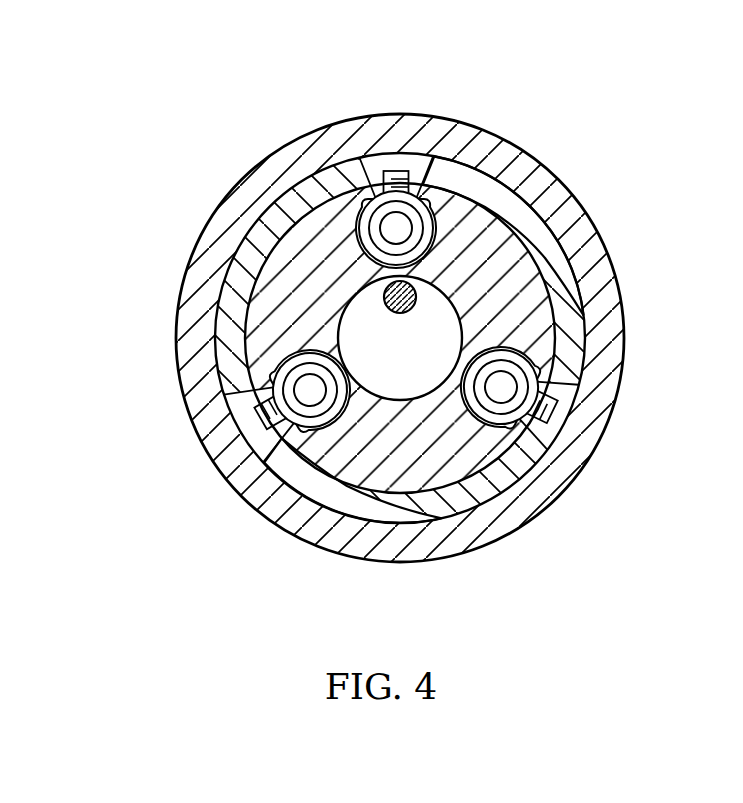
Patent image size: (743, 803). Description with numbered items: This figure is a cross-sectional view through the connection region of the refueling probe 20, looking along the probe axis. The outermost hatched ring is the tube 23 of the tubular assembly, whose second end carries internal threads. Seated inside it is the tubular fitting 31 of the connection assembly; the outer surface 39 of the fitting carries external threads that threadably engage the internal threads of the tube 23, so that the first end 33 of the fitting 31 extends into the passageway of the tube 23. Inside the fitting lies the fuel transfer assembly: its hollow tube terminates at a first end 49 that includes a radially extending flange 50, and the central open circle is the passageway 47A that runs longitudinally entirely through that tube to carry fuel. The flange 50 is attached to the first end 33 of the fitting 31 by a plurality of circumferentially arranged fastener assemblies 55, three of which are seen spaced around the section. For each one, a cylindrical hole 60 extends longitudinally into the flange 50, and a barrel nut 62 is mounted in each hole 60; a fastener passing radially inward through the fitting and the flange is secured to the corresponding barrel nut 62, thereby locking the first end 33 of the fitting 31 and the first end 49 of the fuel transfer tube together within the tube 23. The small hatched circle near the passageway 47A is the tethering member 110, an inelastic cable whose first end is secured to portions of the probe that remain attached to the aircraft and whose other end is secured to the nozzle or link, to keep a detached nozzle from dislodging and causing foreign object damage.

The refueling probe 20 is at (525, 143).
The tube 23 is at (176, 341).
The tubular fitting 31 is at (553, 250).
The first end 33 is at (507, 201).
The outer surface 39 is at (580, 293).
The passageway 47A is at (418, 352).
The first end 49 is at (421, 498).
The flange 50 is at (391, 466).
The fastener assemblies 55 is at (402, 168).
The hole 60 is at (412, 205).
The barrel nut 62 is at (292, 425).
The tethering member 110 is at (370, 297).